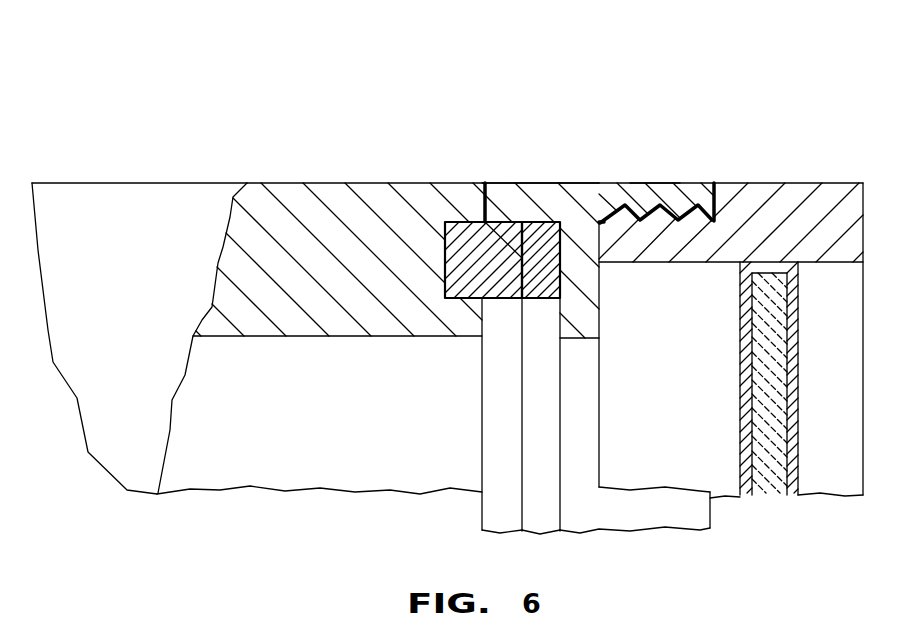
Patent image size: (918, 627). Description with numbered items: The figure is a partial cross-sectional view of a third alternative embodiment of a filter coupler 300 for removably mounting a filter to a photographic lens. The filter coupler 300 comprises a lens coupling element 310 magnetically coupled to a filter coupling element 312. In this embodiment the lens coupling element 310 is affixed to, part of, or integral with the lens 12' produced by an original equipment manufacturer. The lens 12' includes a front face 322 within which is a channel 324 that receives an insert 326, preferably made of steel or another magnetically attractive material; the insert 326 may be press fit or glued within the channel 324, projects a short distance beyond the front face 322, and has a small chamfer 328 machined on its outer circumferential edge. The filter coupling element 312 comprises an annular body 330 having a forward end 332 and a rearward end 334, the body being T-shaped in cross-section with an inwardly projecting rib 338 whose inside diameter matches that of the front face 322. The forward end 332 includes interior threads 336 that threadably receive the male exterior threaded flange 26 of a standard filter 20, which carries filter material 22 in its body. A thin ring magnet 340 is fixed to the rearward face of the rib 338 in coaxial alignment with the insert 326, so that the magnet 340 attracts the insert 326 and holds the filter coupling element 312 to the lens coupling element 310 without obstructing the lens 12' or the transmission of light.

The lens 12' is at (139, 279).
The filter 20 is at (847, 165).
The filter material 22 is at (770, 487).
The exterior threaded flange 26 is at (700, 222).
The filter coupler 300 is at (476, 274).
The lens coupling element 310 is at (360, 176).
The filter coupling element 312 is at (607, 178).
The front face 322 is at (482, 332).
The channel 324 is at (445, 253).
The insert 326 is at (522, 226).
The chamfer 328 is at (502, 183).
The annular body 330 is at (653, 183).
The forward end 332 is at (716, 207).
The rearward end 334 is at (480, 210).
The interior threads 336 is at (633, 224).
The inwardly projecting rib 338 is at (580, 340).
The magnet 340 is at (542, 300).